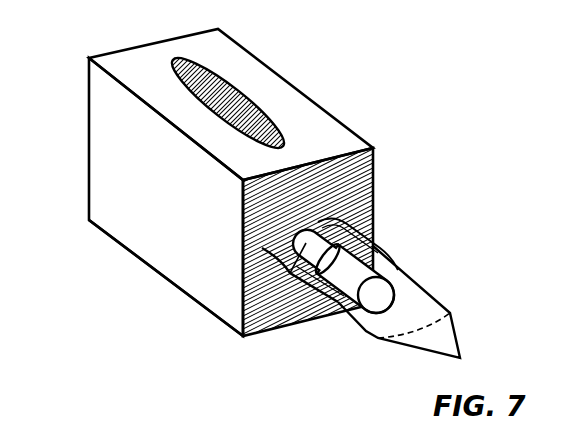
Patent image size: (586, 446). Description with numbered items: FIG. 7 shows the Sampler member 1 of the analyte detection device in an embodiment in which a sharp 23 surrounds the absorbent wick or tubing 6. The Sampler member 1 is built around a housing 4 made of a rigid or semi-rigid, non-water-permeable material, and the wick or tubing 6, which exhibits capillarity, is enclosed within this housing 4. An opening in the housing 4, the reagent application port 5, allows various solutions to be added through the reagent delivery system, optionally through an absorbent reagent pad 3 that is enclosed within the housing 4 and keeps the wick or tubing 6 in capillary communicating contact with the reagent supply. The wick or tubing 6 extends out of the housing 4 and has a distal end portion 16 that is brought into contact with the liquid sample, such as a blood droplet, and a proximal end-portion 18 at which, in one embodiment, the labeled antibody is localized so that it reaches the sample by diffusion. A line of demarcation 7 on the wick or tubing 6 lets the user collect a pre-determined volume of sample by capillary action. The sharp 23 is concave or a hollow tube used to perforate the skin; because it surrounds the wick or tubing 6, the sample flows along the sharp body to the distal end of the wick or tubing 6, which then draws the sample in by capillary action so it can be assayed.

The Sampler member 1 is at (103, 123).
The absorbent reagent pad 3 is at (372, 212).
The housing 4 is at (110, 238).
The reagent application port 5 is at (230, 90).
The absorbent wick or tubing 6 is at (372, 238).
The line of demarcation 7 is at (312, 278).
The distal end portion 16 is at (348, 290).
The proximal end-portion 18 is at (283, 285).
The sharp 23 is at (421, 301).